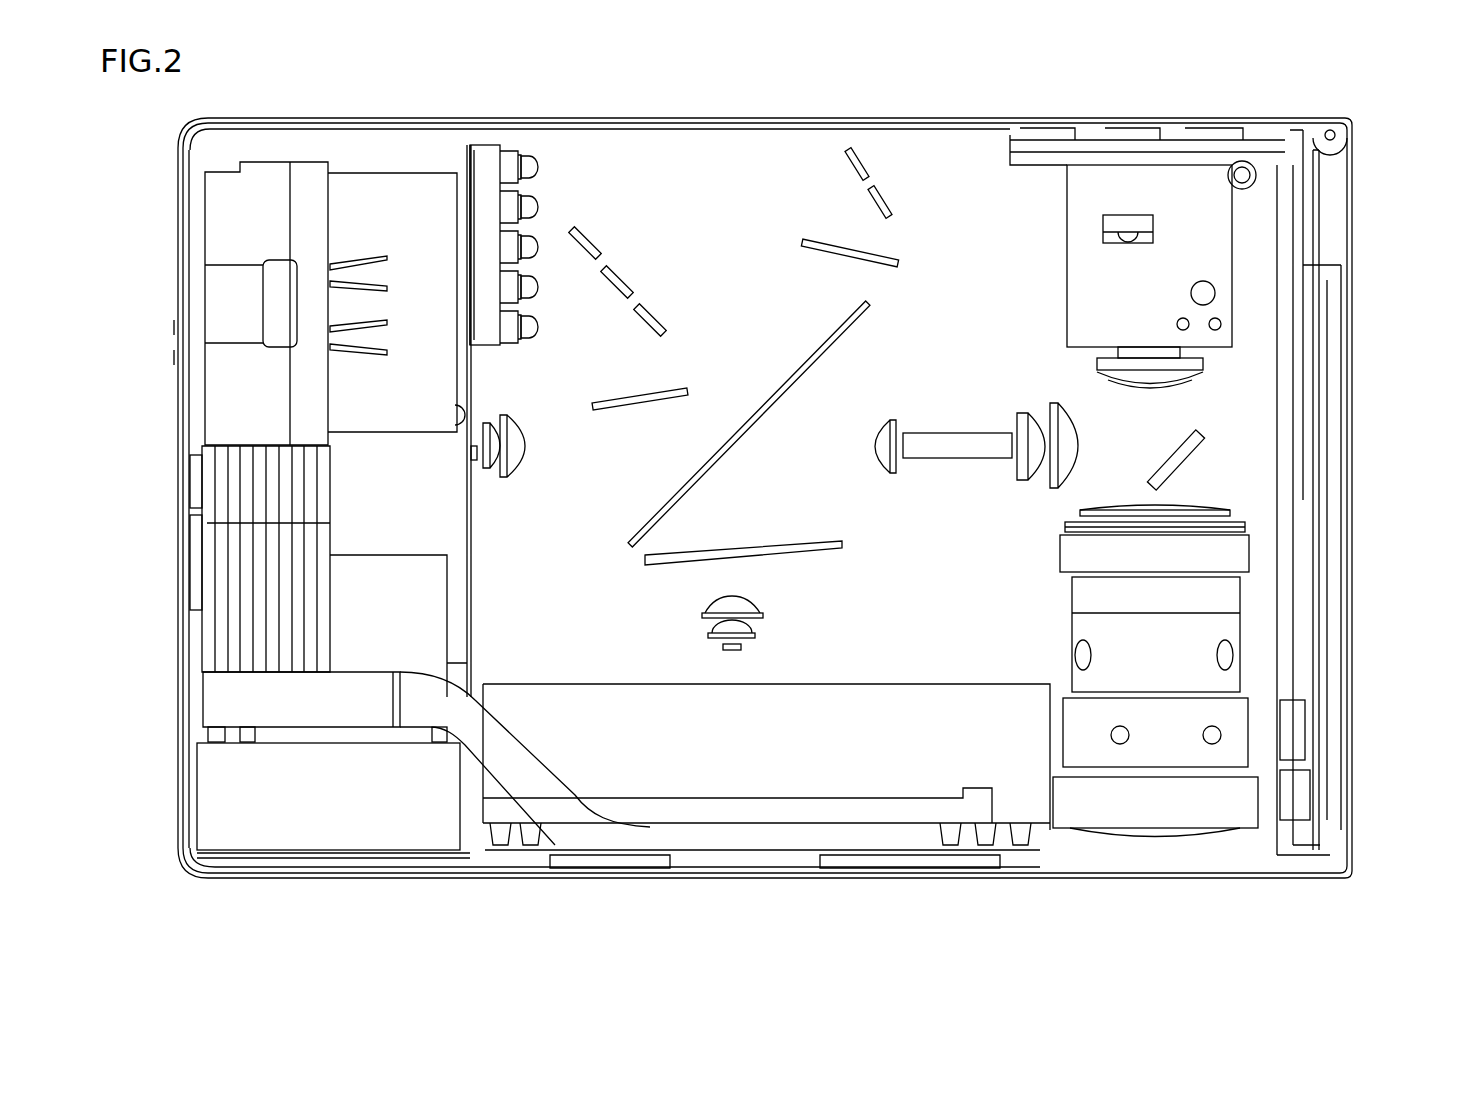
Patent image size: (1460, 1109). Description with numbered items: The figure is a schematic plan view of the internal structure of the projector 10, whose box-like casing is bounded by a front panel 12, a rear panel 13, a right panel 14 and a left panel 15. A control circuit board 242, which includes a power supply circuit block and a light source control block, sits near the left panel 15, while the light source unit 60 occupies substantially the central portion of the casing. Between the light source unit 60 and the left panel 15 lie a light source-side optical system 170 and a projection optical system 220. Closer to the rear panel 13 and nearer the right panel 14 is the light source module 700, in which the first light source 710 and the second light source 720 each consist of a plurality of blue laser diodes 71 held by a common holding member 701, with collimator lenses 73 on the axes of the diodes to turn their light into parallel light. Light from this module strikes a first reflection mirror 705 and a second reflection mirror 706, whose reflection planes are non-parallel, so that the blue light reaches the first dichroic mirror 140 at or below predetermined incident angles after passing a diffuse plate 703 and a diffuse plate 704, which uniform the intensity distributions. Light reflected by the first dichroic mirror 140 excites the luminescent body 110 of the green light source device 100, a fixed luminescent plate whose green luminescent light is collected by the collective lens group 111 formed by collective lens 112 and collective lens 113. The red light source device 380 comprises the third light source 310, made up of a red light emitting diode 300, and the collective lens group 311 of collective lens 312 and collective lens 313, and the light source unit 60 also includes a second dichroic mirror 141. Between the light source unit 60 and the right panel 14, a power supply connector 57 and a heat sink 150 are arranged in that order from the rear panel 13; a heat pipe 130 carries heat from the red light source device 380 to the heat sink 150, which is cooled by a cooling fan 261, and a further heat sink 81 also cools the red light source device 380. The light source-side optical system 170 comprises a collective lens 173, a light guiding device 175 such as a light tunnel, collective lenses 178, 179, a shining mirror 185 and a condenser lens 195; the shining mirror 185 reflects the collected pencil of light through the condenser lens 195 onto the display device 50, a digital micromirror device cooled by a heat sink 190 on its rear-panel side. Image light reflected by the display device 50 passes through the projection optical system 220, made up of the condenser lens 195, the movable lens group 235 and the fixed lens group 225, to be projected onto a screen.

The projector 10 is at (1358, 120).
The front panel 12 is at (437, 879).
The rear panel 13 is at (353, 115).
The right panel 14 is at (187, 560).
The left panel 15 is at (1353, 565).
The display device 50 is at (1205, 377).
The power supply connector 57 is at (263, 195).
The light source unit 60 is at (597, 645).
The blue laser diode 71 is at (517, 150).
The collimator lens 73 is at (540, 160).
The heat sink 81 is at (1037, 805).
The green light source device 100 is at (468, 462).
The luminescent body 110 is at (471, 457).
The collective lens group 111 is at (488, 422).
The collective lens 112 is at (516, 452).
The collective lens 113 is at (492, 452).
The heat pipe 130 is at (258, 700).
The first dichroic mirror 140 is at (802, 365).
The second dichroic mirror 141 is at (793, 540).
The heat sink 150 is at (396, 520).
The light source-side optical system 170 is at (956, 408).
The collective lens 173 is at (896, 475).
The light guiding device 175 is at (957, 460).
The collective lens 178 is at (1024, 408).
The collective lens 179 is at (1062, 408).
The shining mirror 185 is at (1195, 462).
The heat sink 190 is at (1188, 222).
The condenser lens 195 is at (1188, 392).
The projection optical system 220 is at (1247, 648).
The fixed lens group 225 is at (1182, 798).
The movable lens group 235 is at (1220, 592).
The control circuit board 242 is at (1320, 725).
The cooling fan 261 is at (278, 783).
The red light emitting diode 300 is at (730, 655).
The third light source 310 is at (718, 660).
The collective lens group 311 is at (768, 625).
The collective lens 312 is at (720, 606).
The collective lens 313 is at (718, 633).
The red light source device 380 is at (752, 657).
The light source module 700 is at (485, 141).
The holding member 701 is at (466, 145).
The diffuse plate 703 is at (615, 400).
The diffuse plate 704 is at (812, 240).
The first reflection mirror 705 is at (639, 272).
The second reflection mirror 706 is at (886, 166).
The first light source 710 is at (537, 263).
The second light source 720 is at (537, 183).